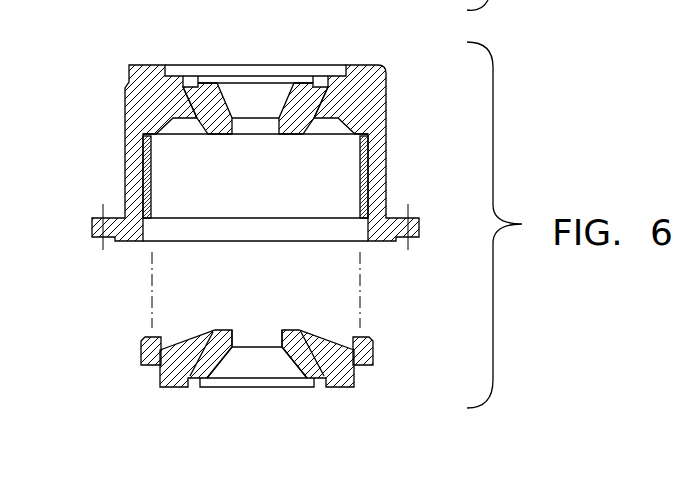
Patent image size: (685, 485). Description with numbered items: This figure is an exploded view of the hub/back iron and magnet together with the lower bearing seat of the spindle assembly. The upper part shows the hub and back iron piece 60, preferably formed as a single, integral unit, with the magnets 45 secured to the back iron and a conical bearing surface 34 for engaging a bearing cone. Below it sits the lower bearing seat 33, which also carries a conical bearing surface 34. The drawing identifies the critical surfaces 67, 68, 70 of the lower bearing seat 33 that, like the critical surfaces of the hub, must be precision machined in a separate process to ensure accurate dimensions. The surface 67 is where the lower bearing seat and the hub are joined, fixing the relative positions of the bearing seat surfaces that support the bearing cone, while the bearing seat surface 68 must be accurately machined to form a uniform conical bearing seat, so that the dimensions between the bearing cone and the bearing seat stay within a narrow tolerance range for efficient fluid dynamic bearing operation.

The lower bearing seat 33 is at (160, 378).
The conical bearing surfaces 34 is at (288, 100).
The magnets 45 is at (380, 162).
The hub and back iron piece 60 is at (126, 174).
The critical surface (joining surface) 67 is at (139, 353).
The critical surface (bearing seat surface) 68 is at (233, 366).
The critical surface 70 is at (274, 336).